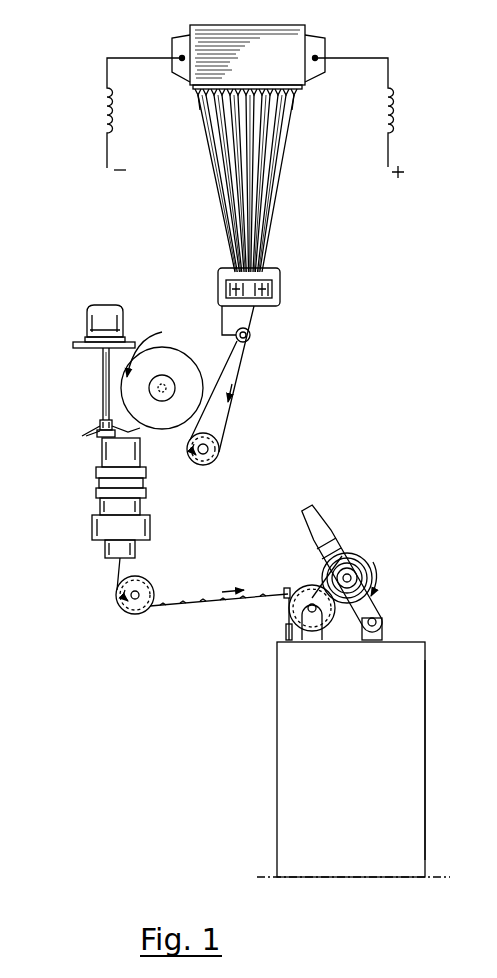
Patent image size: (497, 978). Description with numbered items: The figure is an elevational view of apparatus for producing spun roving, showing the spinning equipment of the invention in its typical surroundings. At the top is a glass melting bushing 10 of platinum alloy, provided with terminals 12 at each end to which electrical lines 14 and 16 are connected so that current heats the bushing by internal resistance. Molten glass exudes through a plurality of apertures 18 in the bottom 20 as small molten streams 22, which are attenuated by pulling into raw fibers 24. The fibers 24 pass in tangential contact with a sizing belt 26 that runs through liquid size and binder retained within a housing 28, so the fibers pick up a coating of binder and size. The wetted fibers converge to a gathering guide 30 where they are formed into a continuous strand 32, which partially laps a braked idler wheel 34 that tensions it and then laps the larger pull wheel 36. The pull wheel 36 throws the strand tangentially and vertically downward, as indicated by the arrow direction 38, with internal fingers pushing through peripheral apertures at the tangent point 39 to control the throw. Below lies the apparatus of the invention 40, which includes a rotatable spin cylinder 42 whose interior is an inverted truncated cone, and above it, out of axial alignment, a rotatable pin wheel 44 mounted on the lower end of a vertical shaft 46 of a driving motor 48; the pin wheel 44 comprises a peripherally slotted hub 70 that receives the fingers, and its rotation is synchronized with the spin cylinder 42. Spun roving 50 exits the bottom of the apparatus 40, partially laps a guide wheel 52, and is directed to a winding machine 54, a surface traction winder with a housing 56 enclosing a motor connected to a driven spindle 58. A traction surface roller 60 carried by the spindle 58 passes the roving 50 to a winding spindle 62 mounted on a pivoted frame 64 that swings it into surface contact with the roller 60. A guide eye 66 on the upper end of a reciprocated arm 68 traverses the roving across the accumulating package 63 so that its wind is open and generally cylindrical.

The glass melting bushing 10 is at (275, 60).
The terminals 12 is at (180, 38).
The electrical line 14 is at (390, 66).
The electrical line 16 is at (107, 60).
The apertures 18 is at (196, 95).
The bottom 20 is at (192, 90).
The molten streams 22 is at (206, 98).
The raw fibers 24 is at (242, 153).
The sizing belt 26 is at (270, 292).
The housing 28 is at (276, 268).
The gathering guide 30 is at (251, 338).
The strand 32 is at (246, 359).
The idler wheel 34 is at (221, 449).
The pull wheel 36 is at (202, 362).
The arrow direction 38 is at (144, 346).
The tangent point 39 is at (117, 388).
The apparatus of invention 40 is at (83, 423).
The spin cylinder 42 is at (100, 458).
The pin wheel 44 is at (87, 436).
The shaft 46 is at (105, 362).
The driving motor 48 is at (103, 302).
The spun roving 50 is at (117, 568).
The guide wheel 52 is at (152, 578).
The winding machine 54 is at (416, 644).
The housing 56 is at (426, 701).
The driven spindle 58 is at (310, 601).
The traction surface roller 60 is at (298, 610).
The winding spindle 62 is at (345, 558).
The package 63 is at (376, 561).
The pivoted frame 64 is at (305, 506).
The guide eye 66 is at (286, 591).
The arm 68 is at (284, 628).
The hub 70 is at (102, 424).